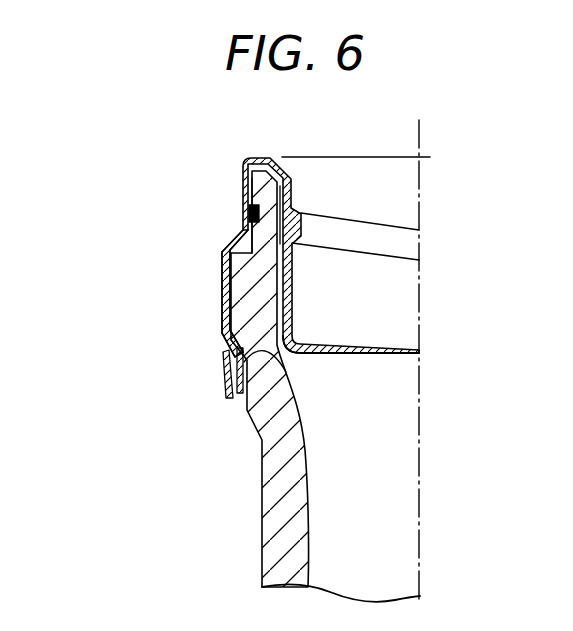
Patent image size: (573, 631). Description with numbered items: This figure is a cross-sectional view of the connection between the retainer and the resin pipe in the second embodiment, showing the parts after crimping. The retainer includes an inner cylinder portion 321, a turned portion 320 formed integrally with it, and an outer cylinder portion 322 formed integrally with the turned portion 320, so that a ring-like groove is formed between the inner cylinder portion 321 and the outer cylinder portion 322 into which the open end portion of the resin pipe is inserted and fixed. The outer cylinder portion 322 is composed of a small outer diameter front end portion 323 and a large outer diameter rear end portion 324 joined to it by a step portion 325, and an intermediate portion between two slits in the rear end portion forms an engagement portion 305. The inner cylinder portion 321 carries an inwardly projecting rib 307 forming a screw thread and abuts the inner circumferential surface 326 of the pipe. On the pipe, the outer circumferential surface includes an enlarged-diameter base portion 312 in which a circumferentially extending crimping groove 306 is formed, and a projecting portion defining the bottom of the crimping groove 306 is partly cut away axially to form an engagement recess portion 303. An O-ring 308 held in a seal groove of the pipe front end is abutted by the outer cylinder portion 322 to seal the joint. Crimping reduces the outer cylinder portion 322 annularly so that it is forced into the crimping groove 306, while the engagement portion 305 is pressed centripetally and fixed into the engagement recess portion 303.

The engagement recess portion 303 is at (235, 418).
The engagement portion 305 is at (233, 405).
The crimping groove 306 is at (280, 364).
The inwardly projecting rib 307 is at (407, 237).
The O-ring 308 is at (248, 212).
The enlarged-diameter base portion 312 is at (225, 246).
The turned portion 320 is at (357, 157).
The inner cylinder portion 321 is at (408, 289).
The outer cylinder portion 322 is at (200, 267).
The small outer diameter front end portion 323 is at (243, 168).
The large outer diameter rear end portion 324 is at (408, 385).
The step portion 325 is at (238, 247).
The inner circumferential surface 326 is at (277, 174).